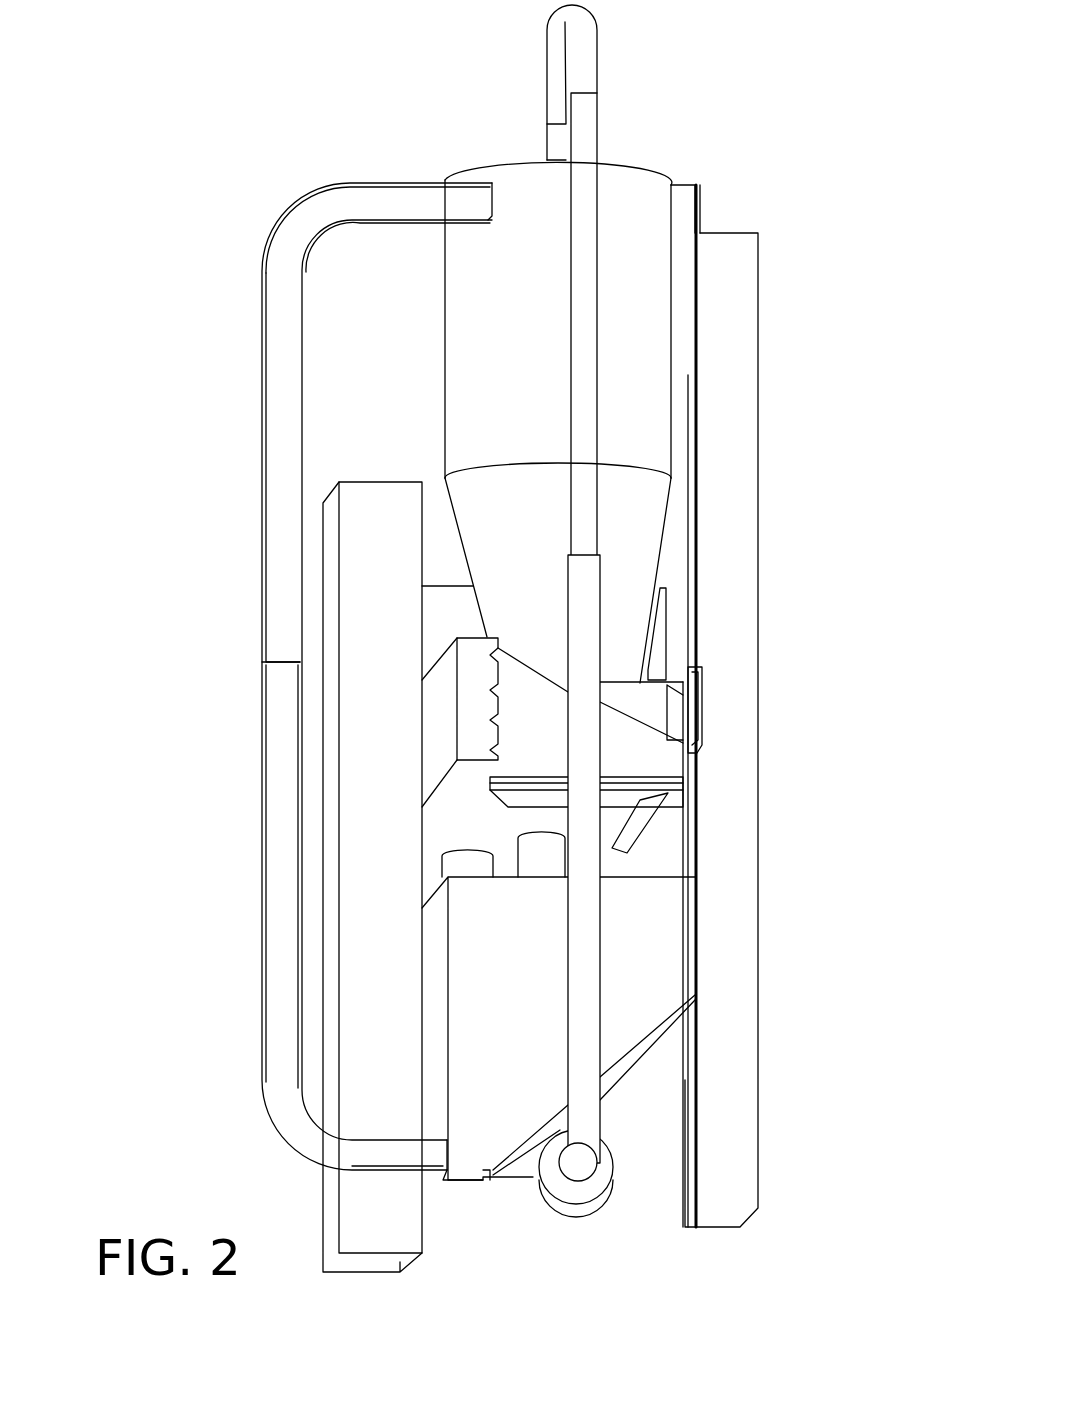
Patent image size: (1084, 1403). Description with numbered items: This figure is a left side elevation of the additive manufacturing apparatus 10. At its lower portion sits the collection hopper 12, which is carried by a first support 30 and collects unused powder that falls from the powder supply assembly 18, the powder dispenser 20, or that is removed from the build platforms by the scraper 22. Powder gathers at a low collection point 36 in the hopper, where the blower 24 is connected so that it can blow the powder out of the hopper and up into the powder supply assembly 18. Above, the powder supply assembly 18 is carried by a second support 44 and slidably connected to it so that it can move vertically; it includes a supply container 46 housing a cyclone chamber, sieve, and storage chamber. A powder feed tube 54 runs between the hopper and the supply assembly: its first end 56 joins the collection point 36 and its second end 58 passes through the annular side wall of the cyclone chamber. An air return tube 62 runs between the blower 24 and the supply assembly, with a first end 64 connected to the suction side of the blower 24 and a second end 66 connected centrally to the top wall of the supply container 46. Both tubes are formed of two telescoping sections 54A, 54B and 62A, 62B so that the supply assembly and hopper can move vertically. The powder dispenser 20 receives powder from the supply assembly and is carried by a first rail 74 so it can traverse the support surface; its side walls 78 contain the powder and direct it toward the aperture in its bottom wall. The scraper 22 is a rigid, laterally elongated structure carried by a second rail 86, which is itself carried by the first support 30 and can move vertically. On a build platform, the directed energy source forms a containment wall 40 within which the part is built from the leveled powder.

The apparatus 10 is at (782, 58).
The collection hopper 12 is at (702, 930).
The powder supply assembly 18 is at (632, 226).
The powder dispenser 20 is at (645, 705).
The scraper 22 is at (670, 780).
The blower 24 is at (568, 1208).
The first support 30 is at (330, 1005).
The collection point 36 is at (488, 1172).
The containment wall 40 is at (468, 858).
The second support 44 is at (735, 338).
The supply container 46 is at (640, 290).
The powder feed tube 54 is at (282, 200).
The telescoping section 54A is at (265, 385).
The telescoping section 54B is at (268, 830).
The first end 56 is at (422, 1157).
The second end 58 is at (470, 195).
The air return tube 62 is at (595, 520).
The telescoping section 62A is at (585, 418).
The telescoping section 62B is at (583, 930).
The first end 64 is at (578, 1160).
The second end 66 is at (555, 130).
The first rail 74 is at (705, 705).
The side walls 78 is at (640, 670).
The second rail 86 is at (466, 720).